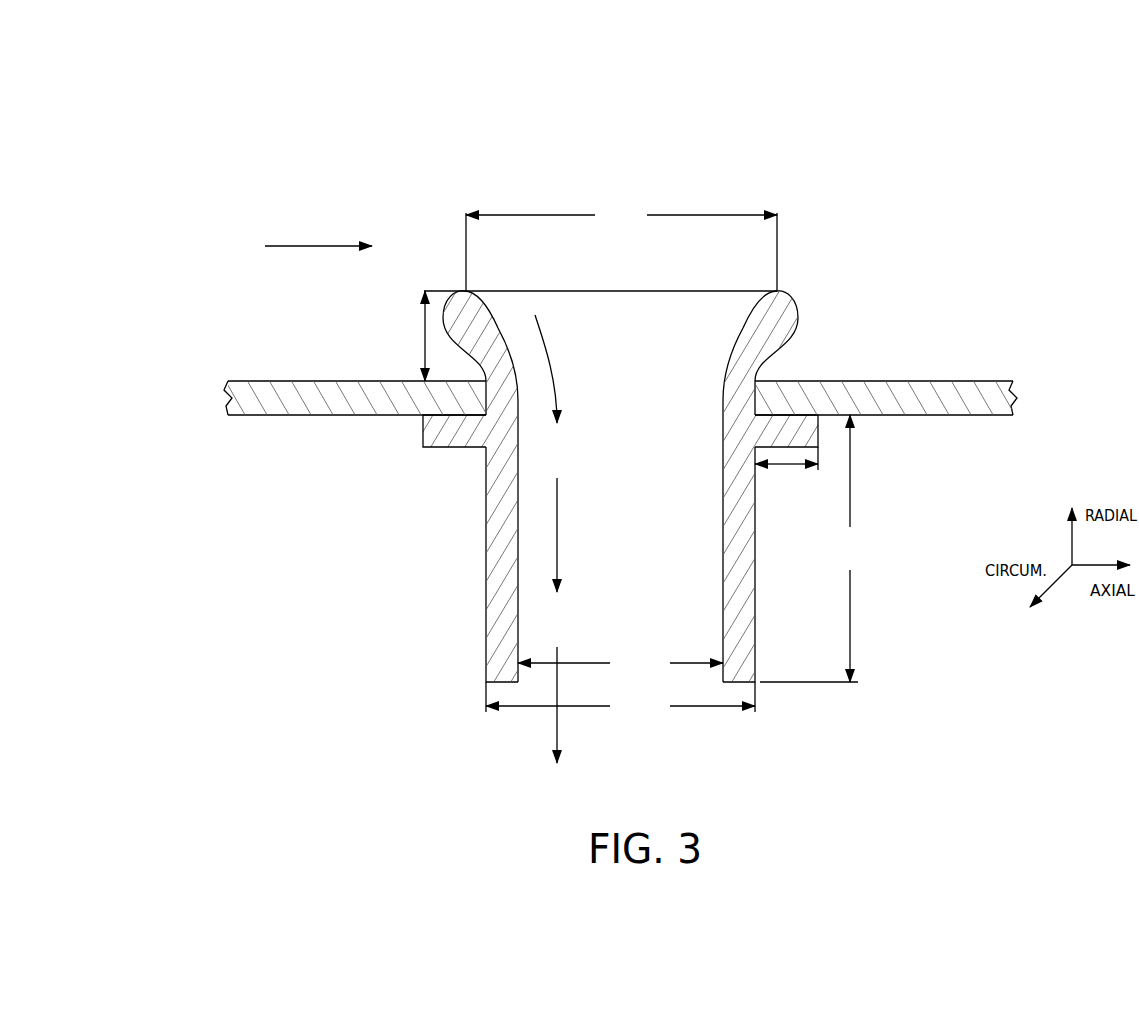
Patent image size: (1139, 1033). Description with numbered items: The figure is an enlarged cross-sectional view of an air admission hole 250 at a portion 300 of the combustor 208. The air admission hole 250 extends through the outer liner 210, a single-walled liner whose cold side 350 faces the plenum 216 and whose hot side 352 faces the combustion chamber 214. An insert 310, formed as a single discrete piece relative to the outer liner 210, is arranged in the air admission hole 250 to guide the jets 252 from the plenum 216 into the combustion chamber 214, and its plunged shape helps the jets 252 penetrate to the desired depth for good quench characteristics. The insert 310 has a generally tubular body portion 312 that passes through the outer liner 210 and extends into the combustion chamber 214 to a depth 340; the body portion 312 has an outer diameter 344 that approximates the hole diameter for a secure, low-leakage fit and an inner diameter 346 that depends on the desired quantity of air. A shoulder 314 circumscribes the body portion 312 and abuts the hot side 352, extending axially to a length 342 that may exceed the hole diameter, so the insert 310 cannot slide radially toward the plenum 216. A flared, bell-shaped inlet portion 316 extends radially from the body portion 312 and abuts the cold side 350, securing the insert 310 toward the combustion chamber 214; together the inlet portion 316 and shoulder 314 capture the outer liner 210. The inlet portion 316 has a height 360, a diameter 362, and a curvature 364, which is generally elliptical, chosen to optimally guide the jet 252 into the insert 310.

The portion 300 is at (773, 122).
The combustor 208 is at (235, 625).
The outer liner 210 is at (240, 381).
The combustion chamber 214 is at (372, 535).
The plenum 216 is at (508, 280).
The air admission hole 250 is at (697, 342).
The jets 252 is at (318, 246).
The insert 310 is at (617, 490).
The body portion 312 is at (486, 522).
The shoulder 314 is at (423, 445).
The inlet portion 316 is at (798, 314).
The depth 340 is at (818, 548).
The length 342 is at (790, 468).
The outer diameter 344 is at (620, 700).
The inner diameter 346 is at (620, 663).
The cold side 350 is at (312, 381).
The hot side 352 is at (310, 415).
The height 360 is at (425, 333).
The diameter 362 is at (621, 247).
The curvature 364 is at (781, 334).